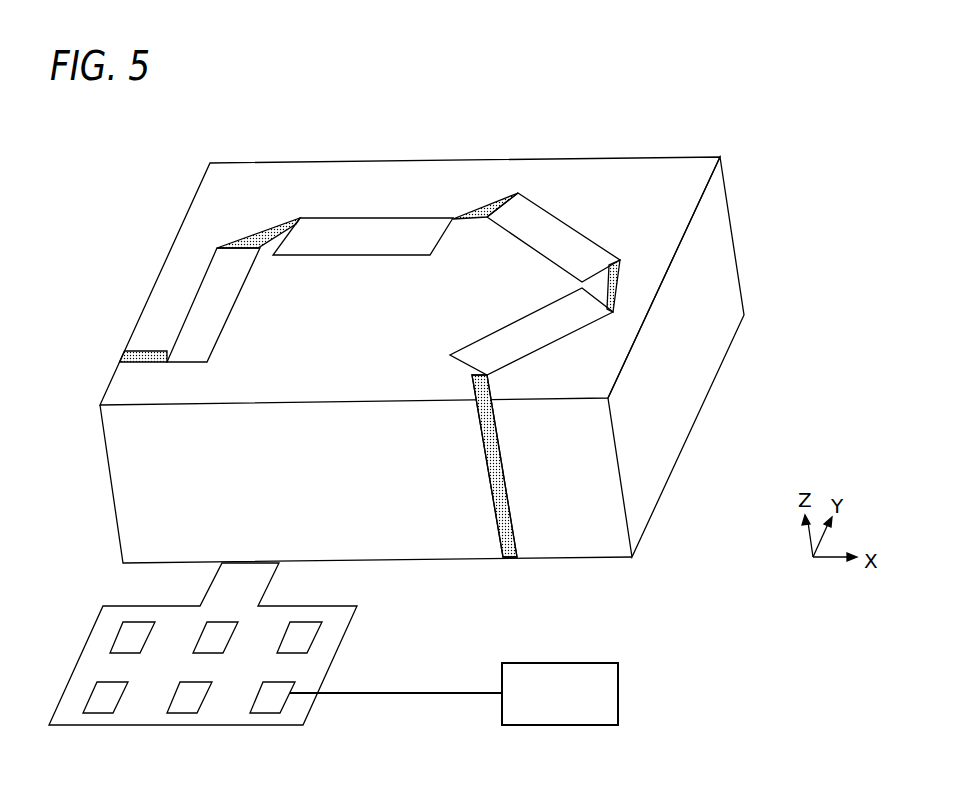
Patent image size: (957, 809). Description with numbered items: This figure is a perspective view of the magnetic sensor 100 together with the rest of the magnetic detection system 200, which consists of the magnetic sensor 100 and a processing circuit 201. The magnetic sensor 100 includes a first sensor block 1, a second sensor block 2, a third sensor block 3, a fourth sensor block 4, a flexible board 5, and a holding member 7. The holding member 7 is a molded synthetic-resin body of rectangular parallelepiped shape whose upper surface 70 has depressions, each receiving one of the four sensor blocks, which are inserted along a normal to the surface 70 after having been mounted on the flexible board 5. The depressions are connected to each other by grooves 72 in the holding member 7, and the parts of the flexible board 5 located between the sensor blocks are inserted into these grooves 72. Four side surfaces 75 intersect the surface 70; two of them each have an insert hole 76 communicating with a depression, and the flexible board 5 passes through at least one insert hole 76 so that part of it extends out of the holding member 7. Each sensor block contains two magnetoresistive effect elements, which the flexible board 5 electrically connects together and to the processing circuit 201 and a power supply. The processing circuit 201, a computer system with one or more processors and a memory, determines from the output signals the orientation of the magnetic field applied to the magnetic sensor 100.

The first sensor block 1 is at (230, 307).
The second sensor block 2 is at (335, 227).
The third sensor block 3 is at (588, 247).
The fourth sensor block 4 is at (517, 322).
The flexible board 5 is at (100, 637).
The holding member 7 is at (682, 422).
The surface 70 is at (235, 170).
The grooves 72 is at (267, 232).
The side surfaces 75 is at (728, 270).
The insert hole 76 is at (140, 350).
The magnetic sensor 100 is at (640, 518).
The magnetic detection system 200 is at (722, 595).
The processing circuit 201 is at (617, 685).